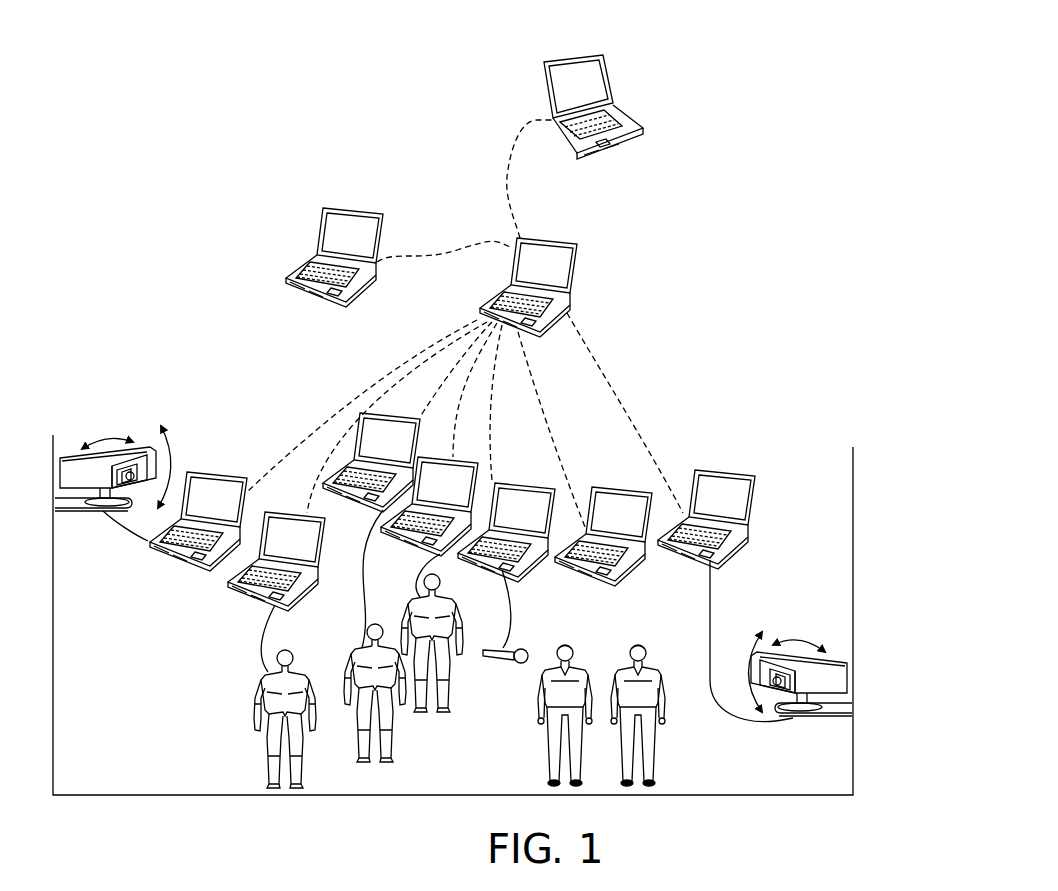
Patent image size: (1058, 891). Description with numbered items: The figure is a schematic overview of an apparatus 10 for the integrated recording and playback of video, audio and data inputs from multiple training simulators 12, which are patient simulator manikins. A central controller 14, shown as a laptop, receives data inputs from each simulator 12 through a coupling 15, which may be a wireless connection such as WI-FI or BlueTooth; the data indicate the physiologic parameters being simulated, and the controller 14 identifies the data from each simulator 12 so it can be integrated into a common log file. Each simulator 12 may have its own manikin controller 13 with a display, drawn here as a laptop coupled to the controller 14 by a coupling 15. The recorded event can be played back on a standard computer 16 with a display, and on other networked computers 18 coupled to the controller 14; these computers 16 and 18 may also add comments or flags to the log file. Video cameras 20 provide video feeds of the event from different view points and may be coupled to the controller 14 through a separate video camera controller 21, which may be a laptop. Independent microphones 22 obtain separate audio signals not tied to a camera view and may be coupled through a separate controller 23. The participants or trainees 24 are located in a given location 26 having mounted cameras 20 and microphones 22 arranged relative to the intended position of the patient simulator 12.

The apparatus 10 is at (845, 76).
The training simulator 12 is at (258, 687).
The manikin controller 13 is at (278, 555).
The controller 14 is at (523, 288).
The coupling 15 is at (398, 370).
The standard computer 16 is at (362, 298).
The networked computer 18 is at (627, 137).
The video camera 20 is at (63, 455).
The video camera controller 21 is at (207, 472).
The independent microphone 22 is at (510, 648).
The microphone controller 23 is at (500, 532).
The participant 24 is at (540, 692).
The location 26 is at (853, 497).